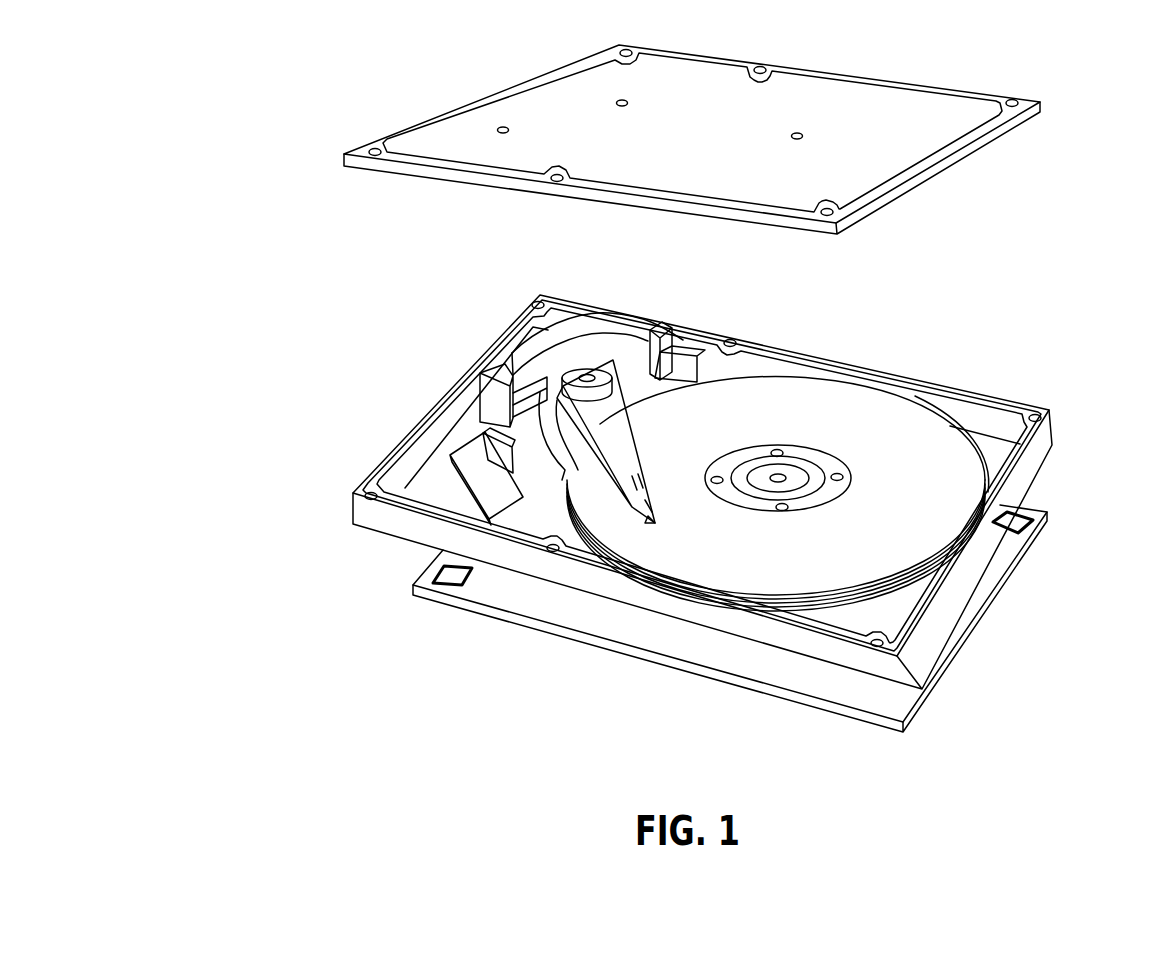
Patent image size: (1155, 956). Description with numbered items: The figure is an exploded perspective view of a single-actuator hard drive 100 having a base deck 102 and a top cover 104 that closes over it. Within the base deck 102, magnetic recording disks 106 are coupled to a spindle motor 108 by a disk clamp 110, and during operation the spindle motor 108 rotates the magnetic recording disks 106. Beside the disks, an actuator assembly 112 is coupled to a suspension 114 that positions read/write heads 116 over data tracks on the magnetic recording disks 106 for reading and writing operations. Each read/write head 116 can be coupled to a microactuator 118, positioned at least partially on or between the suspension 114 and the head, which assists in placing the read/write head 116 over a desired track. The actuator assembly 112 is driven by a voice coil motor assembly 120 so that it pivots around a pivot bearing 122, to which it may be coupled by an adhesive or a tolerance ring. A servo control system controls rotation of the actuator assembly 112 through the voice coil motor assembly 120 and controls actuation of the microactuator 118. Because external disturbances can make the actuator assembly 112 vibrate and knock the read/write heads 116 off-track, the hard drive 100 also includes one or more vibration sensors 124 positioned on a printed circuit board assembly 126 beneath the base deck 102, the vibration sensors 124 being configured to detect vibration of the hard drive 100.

The hard drive 100 is at (256, 100).
The base deck 102 is at (1023, 443).
The top cover 104 is at (881, 131).
The magnetic recording disks 106 is at (933, 503).
The spindle motor 108 is at (790, 474).
The disk clamp 110 is at (823, 492).
The actuator assembly 112 is at (632, 428).
The suspension 114 is at (641, 502).
The read/write heads 116 is at (652, 527).
The microactuator 118 is at (686, 473).
The voice coil motor assembly 120 is at (522, 336).
The pivot bearing 122 is at (597, 378).
The vibration sensors 124 is at (450, 585).
The printed circuit board assembly 126 is at (930, 657).